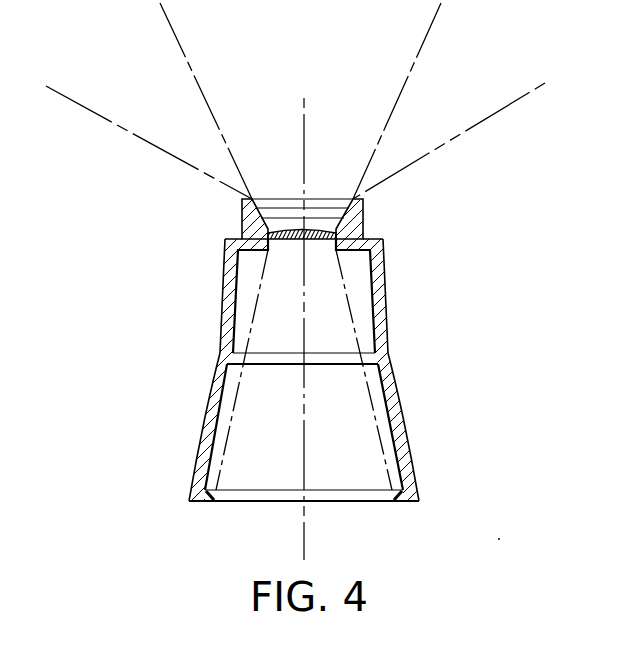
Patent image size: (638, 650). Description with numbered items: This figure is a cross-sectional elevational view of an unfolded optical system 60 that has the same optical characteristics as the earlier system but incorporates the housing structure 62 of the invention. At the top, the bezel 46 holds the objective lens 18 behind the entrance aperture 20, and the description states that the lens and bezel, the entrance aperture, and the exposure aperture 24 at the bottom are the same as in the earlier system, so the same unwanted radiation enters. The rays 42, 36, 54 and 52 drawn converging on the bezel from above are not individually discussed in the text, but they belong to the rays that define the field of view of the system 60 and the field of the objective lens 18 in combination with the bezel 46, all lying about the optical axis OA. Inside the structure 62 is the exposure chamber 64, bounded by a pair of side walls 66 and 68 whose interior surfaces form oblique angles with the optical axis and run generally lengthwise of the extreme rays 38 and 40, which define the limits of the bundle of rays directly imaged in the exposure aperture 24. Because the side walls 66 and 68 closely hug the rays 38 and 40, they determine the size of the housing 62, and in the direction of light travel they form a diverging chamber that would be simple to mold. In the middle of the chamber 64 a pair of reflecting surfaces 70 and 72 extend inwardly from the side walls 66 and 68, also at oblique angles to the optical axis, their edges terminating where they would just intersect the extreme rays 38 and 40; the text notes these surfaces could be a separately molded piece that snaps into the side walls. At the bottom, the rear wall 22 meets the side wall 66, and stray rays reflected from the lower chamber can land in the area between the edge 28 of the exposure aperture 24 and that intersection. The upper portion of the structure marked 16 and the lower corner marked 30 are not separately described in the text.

The optical axis OA is at (300, 285).
The light ray 42' 42 is at (170, 24).
The light ray 36' 36 is at (429, 31).
The light ray 54' 54 is at (118, 126).
The light ray 52' 52 is at (478, 125).
The bezel 46 is at (363, 220).
The objective lens 18 is at (327, 248).
The entrance aperture 20 is at (287, 248).
The housing top 16' 16 is at (248, 249).
The system 60 is at (398, 333).
The structure 62 is at (389, 302).
The reflecting surface 70 is at (245, 364).
The reflecting surface 72 is at (365, 362).
The side wall 66 is at (215, 385).
The side wall 68 is at (398, 400).
The exposure chamber 64 is at (413, 463).
The edge of the exposure aperture 28 is at (214, 500).
The extreme ray 38 is at (230, 447).
The extreme ray 40 is at (378, 425).
The rear wall 22 is at (208, 501).
The base corner 30' 30 is at (393, 502).
The exposure aperture 24 is at (337, 498).